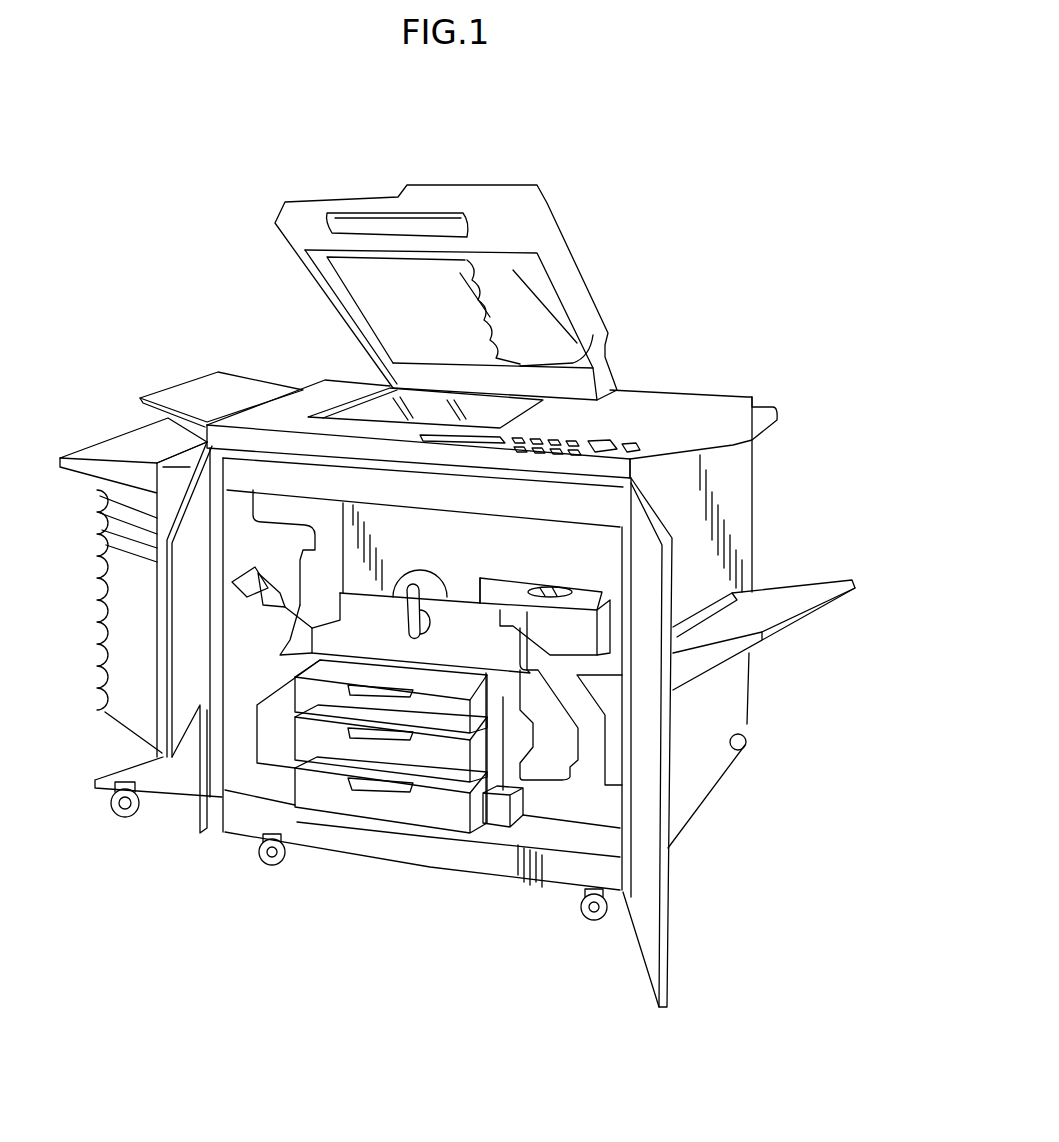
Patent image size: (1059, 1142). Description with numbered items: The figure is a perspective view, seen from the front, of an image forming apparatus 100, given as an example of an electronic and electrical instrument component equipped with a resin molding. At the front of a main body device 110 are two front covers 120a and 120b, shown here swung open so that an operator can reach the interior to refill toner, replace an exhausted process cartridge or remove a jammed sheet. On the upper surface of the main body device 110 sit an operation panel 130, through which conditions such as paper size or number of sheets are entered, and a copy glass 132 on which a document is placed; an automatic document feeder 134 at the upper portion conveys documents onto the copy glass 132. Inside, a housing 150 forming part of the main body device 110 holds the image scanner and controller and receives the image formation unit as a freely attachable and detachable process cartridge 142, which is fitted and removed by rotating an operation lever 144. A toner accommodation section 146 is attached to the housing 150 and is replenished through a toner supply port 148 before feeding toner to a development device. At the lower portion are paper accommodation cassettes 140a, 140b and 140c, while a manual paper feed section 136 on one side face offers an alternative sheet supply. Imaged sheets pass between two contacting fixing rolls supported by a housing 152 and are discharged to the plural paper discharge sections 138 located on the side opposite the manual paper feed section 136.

The image forming apparatus 100 is at (727, 148).
The main body device 110 is at (755, 470).
The front cover 120a is at (195, 787).
The front cover 120b is at (668, 948).
The operation panel 130 is at (565, 440).
The copy glass 132 is at (367, 413).
The automatic document feeder 134 is at (543, 224).
The manual paper feed section 136 is at (823, 580).
The paper discharge sections 138 is at (97, 557).
The paper accommodation cassette 140a is at (320, 695).
The paper accommodation cassette 140b is at (380, 763).
The paper accommodation cassette 140c is at (404, 812).
The process cartridge 142 is at (493, 653).
The operation lever 144 is at (398, 640).
The toner accommodation section 146 is at (572, 637).
The toner supply port 148 is at (600, 603).
The housing 150 is at (603, 558).
The housing 152 is at (250, 668).